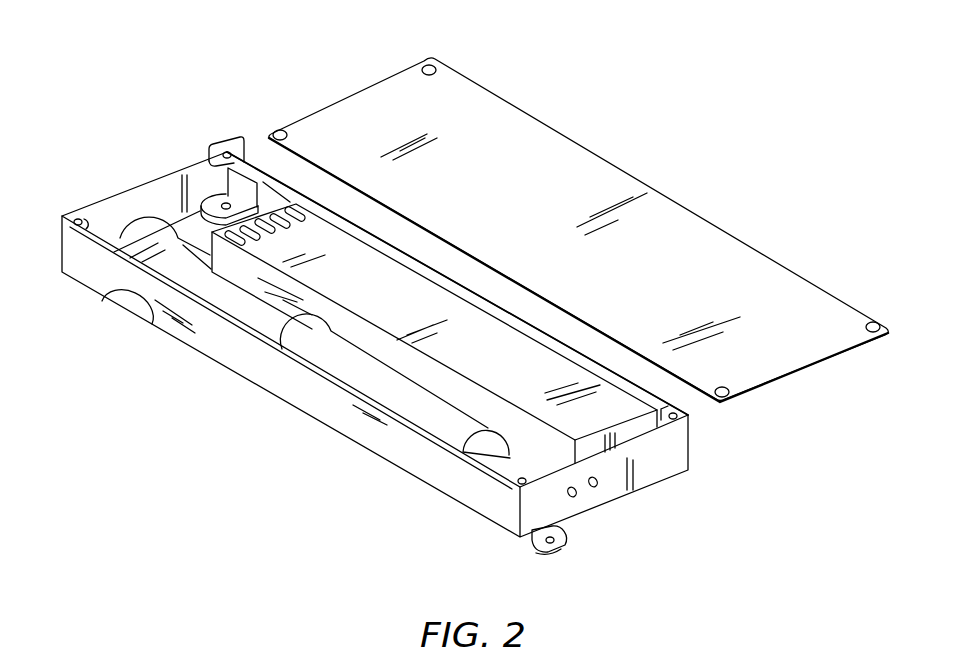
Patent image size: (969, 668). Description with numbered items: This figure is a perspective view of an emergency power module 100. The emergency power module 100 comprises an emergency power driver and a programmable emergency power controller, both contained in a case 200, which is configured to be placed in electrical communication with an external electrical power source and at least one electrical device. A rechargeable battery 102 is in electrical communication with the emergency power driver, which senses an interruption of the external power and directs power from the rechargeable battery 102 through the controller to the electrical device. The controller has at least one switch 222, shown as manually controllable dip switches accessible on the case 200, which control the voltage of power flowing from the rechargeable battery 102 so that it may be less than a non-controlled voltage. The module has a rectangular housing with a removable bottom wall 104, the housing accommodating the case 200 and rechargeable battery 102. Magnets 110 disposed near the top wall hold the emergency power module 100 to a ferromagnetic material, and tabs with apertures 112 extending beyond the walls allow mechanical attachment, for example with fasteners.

The emergency power module 100 is at (93, 90).
The rechargeable battery 102 is at (443, 420).
The removable bottom wall 104 is at (494, 238).
The magnets 110 is at (207, 203).
The tabs with apertures 112 is at (567, 532).
The case 200 is at (364, 272).
The switch 222 is at (293, 210).